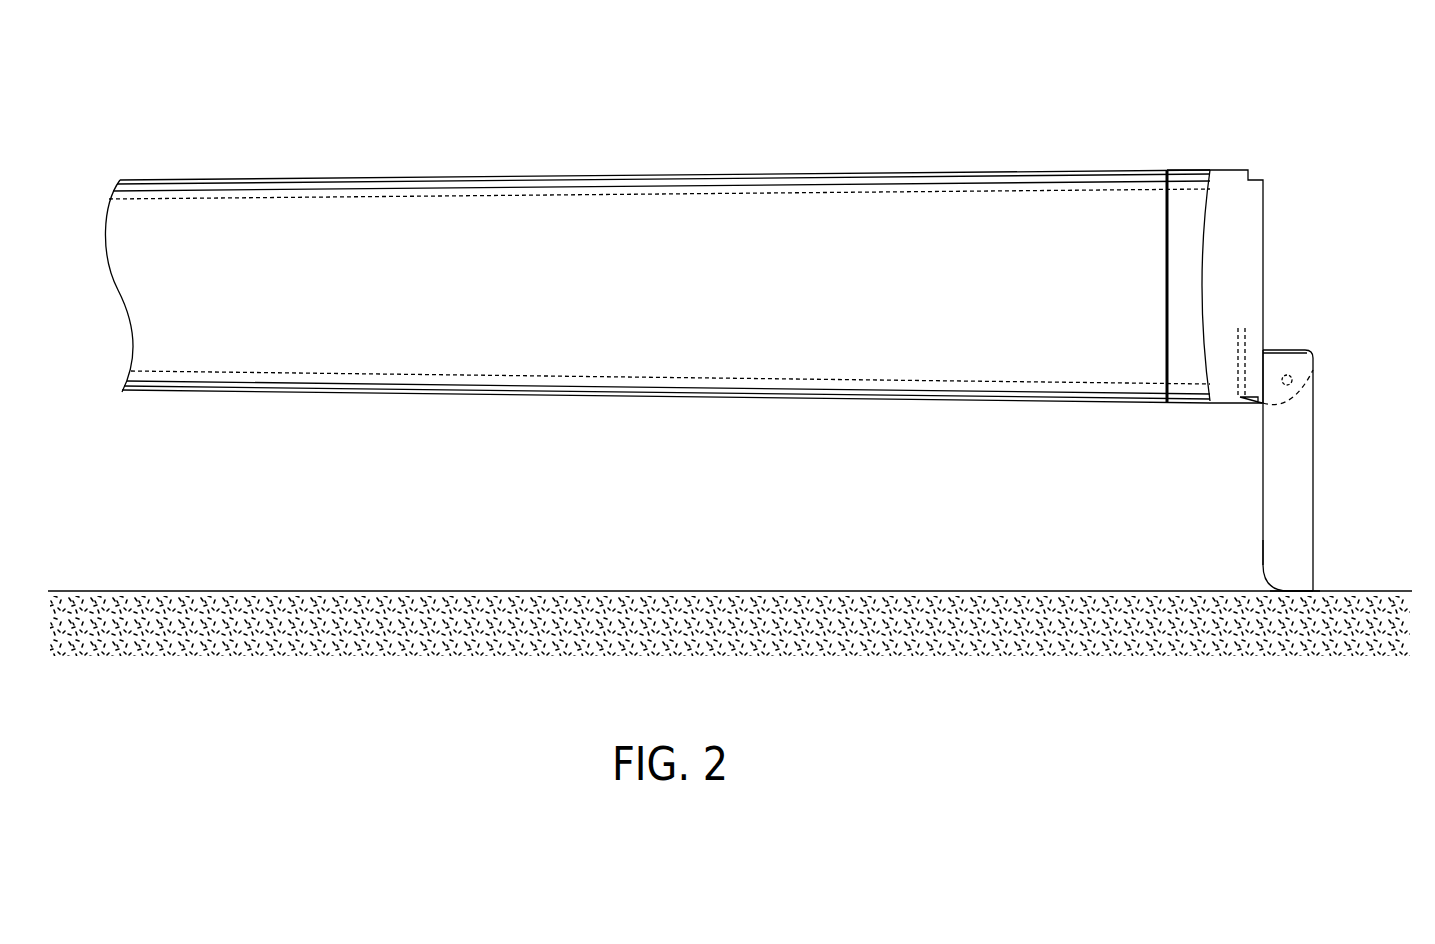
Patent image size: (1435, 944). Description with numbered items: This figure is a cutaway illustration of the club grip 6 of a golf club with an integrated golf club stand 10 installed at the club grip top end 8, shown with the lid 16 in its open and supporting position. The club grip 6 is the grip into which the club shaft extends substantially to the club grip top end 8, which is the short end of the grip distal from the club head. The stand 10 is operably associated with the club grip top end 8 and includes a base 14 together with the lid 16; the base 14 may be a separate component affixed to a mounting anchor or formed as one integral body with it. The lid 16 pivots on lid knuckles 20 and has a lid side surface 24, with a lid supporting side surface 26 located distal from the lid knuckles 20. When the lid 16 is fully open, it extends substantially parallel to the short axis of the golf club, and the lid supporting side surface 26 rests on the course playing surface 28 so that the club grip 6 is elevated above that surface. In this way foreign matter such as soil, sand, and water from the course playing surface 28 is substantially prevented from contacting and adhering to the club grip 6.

The club grip 6 is at (688, 165).
The club grip top end 8 is at (1185, 168).
The integrated golf club stand 10 is at (1252, 210).
The base 14 is at (1263, 197).
The lid 16 is at (1342, 470).
The lid knuckles 20 is at (1296, 380).
The lid side surface 24 is at (1300, 548).
The lid supporting side surface 26 is at (1292, 592).
The course playing surface 28 is at (730, 590).